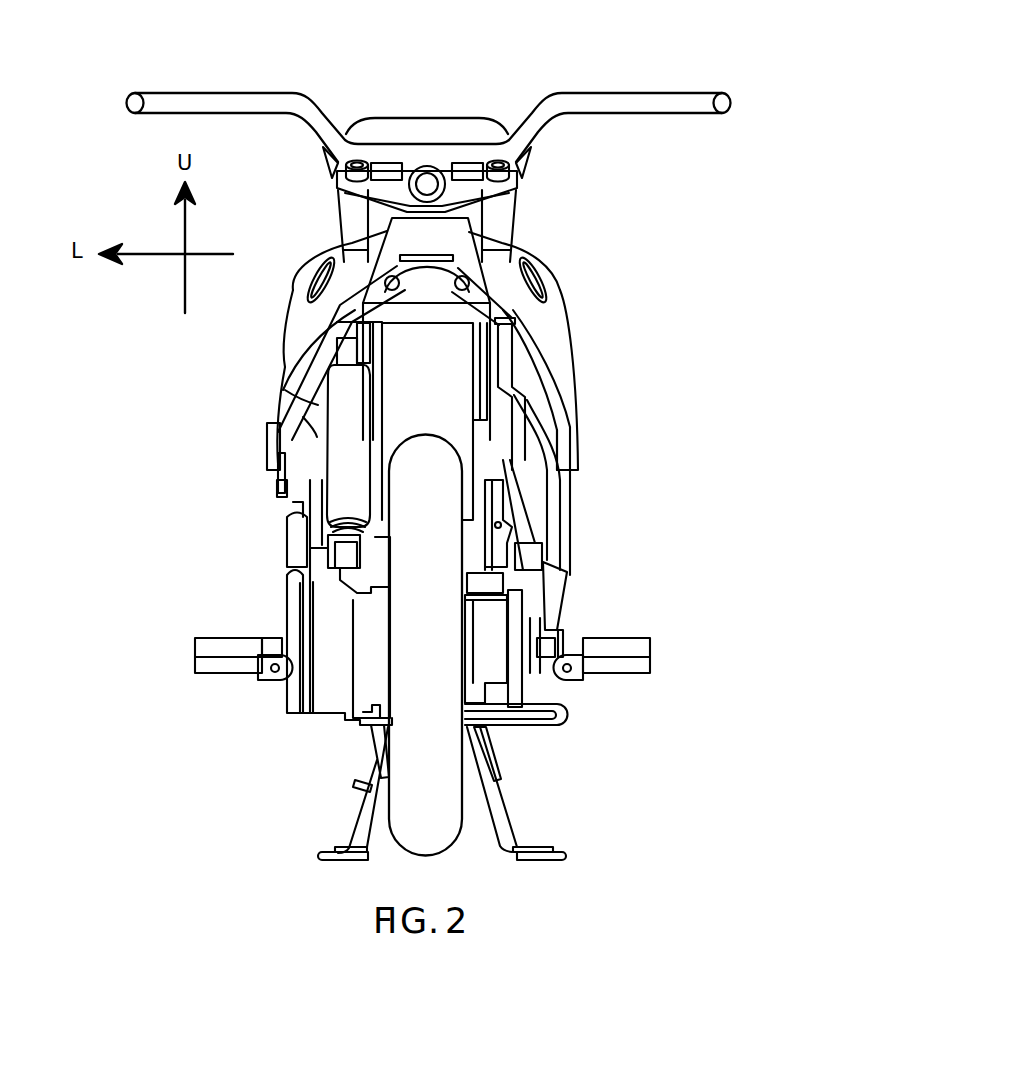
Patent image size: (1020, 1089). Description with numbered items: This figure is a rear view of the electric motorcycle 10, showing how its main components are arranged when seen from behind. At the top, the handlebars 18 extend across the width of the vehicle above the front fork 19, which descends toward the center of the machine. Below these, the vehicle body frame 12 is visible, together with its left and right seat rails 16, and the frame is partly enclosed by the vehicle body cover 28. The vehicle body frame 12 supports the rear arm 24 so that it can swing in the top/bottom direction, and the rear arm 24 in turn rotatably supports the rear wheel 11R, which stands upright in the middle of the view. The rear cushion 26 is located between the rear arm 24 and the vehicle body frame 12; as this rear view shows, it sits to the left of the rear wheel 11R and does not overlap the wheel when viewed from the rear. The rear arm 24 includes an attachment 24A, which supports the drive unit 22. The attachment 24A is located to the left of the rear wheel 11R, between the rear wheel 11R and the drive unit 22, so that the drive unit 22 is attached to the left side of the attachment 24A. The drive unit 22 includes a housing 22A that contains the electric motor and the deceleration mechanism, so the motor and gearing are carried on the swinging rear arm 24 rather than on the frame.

The electric motorcycle 10 is at (734, 74).
The handlebars 18 is at (680, 110).
The front fork 19 is at (348, 225).
The left seat rail and right seat rail 16 is at (360, 304).
The vehicle body cover 28 is at (563, 318).
The vehicle body frame 12 is at (525, 374).
The rear cushion 26 is at (328, 407).
The attachment 24A is at (362, 627).
The housing 22A is at (313, 694).
The drive unit 22 is at (320, 712).
The rear arm 24 is at (372, 710).
The rear wheel 11R is at (443, 837).